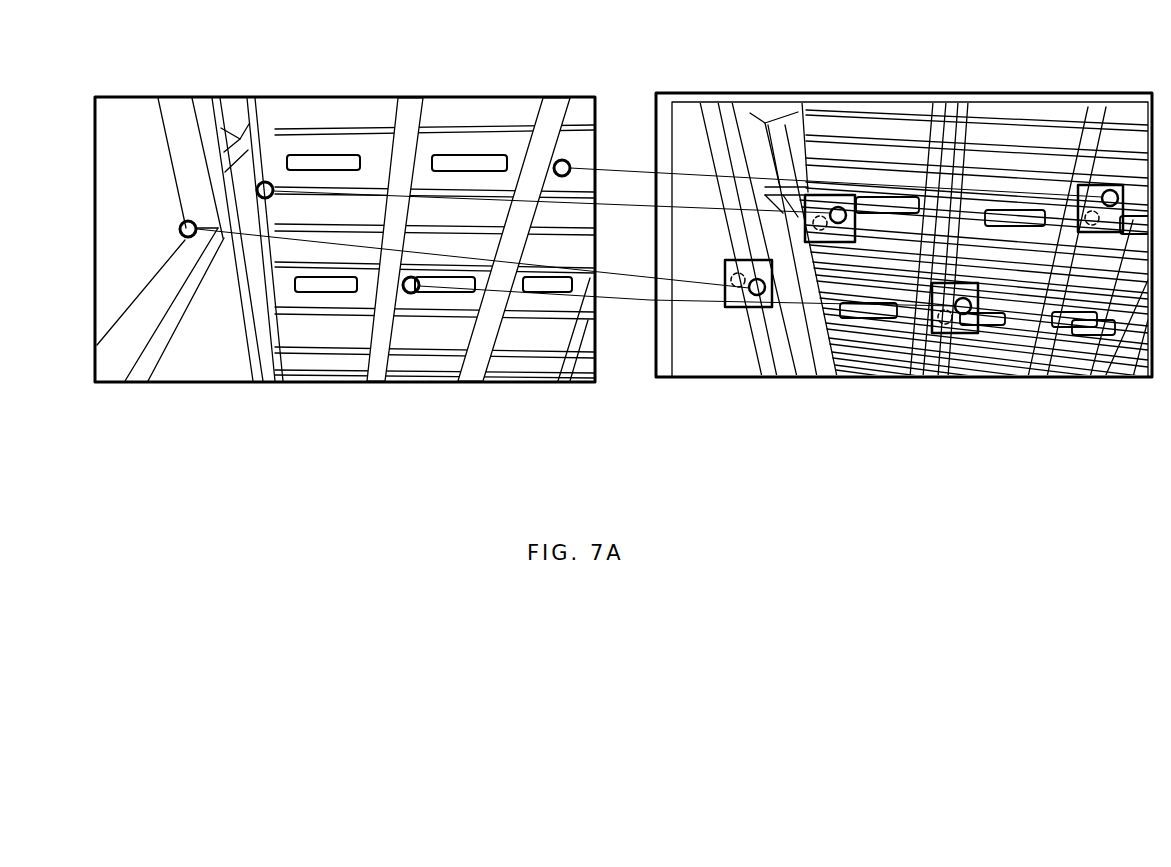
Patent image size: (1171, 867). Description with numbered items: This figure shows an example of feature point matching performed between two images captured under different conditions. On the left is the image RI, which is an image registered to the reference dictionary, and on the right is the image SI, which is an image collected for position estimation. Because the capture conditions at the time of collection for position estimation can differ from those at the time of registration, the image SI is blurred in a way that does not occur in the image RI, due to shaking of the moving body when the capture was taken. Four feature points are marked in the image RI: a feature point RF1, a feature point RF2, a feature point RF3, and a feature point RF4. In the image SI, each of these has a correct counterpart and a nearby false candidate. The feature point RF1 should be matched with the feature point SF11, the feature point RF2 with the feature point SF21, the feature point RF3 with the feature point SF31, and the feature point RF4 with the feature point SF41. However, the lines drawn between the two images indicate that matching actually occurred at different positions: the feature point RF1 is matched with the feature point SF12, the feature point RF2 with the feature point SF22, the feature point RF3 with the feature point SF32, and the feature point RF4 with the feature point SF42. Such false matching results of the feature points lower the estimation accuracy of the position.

The image RI is at (176, 97).
The feature point RF1 is at (265, 182).
The feature point RF2 is at (180, 229).
The feature point RF3 is at (562, 160).
The feature point RF4 is at (411, 293).
The image SI is at (973, 93).
The feature point SF11 is at (821, 214).
The feature point SF12 is at (838, 207).
The feature point SF21 is at (760, 296).
The feature point SF22 is at (738, 300).
The feature point SF31 is at (965, 315).
The feature point SF32 is at (945, 326).
The feature point SF41 is at (1113, 188).
The feature point SF42 is at (1090, 210).